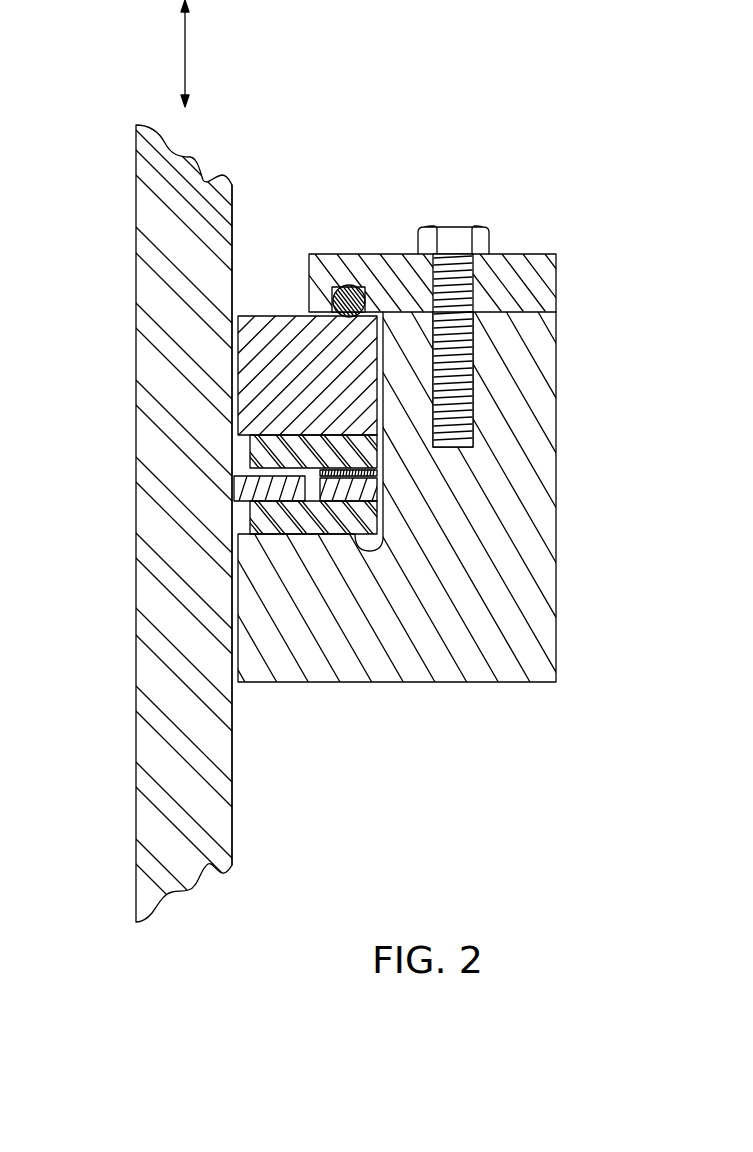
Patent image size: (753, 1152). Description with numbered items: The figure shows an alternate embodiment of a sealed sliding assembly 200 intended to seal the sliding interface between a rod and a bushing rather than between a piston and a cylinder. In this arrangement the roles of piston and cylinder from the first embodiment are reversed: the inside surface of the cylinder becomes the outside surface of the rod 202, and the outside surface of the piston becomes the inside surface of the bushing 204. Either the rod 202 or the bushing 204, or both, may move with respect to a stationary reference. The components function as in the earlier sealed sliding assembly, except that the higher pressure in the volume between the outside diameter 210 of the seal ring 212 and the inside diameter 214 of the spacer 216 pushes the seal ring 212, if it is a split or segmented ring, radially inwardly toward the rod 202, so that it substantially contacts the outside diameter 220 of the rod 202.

The sealed sliding assembly 200 is at (385, 467).
The rod 202 is at (223, 820).
The bushing 204 is at (553, 636).
The outside diameter 210 is at (303, 492).
The seal ring 212 is at (253, 491).
The inside diameter 214 is at (312, 486).
The spacer 216 is at (363, 488).
The outside diameter 220 is at (233, 745).